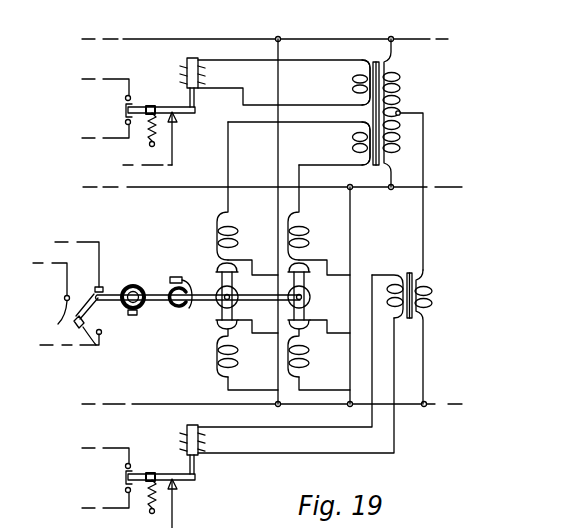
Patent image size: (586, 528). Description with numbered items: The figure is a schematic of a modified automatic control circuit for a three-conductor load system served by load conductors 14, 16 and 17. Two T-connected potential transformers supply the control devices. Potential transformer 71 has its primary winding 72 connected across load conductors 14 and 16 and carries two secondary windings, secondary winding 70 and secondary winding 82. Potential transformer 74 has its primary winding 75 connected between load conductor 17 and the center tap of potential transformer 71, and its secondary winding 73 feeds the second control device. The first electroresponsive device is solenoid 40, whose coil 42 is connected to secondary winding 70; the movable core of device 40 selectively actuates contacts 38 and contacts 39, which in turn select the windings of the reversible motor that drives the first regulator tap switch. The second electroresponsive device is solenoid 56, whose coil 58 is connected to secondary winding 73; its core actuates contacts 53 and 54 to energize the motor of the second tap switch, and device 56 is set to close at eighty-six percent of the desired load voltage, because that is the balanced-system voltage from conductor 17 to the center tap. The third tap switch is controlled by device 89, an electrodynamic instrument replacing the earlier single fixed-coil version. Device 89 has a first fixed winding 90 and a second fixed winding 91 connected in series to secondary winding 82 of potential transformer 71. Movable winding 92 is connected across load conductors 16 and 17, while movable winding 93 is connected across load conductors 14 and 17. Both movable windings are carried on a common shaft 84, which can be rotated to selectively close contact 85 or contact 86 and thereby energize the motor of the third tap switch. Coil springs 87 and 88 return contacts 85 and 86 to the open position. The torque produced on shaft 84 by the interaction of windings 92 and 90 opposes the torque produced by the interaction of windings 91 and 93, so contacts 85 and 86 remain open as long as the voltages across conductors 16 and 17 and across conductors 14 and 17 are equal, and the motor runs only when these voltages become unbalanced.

The load conductor 14 is at (408, 31).
The load conductor 16 is at (428, 188).
The load conductor 17 is at (434, 404).
The contacts 38 is at (125, 122).
The contacts 39 is at (125, 98).
The solenoid 40 is at (184, 111).
The coil 42 is at (207, 72).
The contacts 53 is at (125, 490).
The contacts 54 is at (125, 466).
The solenoid 56 is at (185, 476).
The coil 58 is at (200, 436).
The secondary winding 70 is at (352, 84).
The potential transformer 71 is at (378, 125).
The primary winding 72 is at (401, 88).
The secondary winding 73 is at (395, 275).
The potential transformer 74 is at (418, 347).
The primary winding 75 is at (432, 291).
The secondary winding 82 is at (352, 143).
The shaft 84 is at (153, 281).
The contact 85 is at (85, 347).
The contact 86 is at (50, 299).
The coil spring 87 is at (138, 316).
The coil spring 88 is at (184, 312).
The device 89 is at (229, 250).
The first fixed winding 90 is at (310, 364).
The second fixed winding 91 is at (238, 363).
The movable winding 92 is at (304, 297).
The movable winding 93 is at (217, 288).